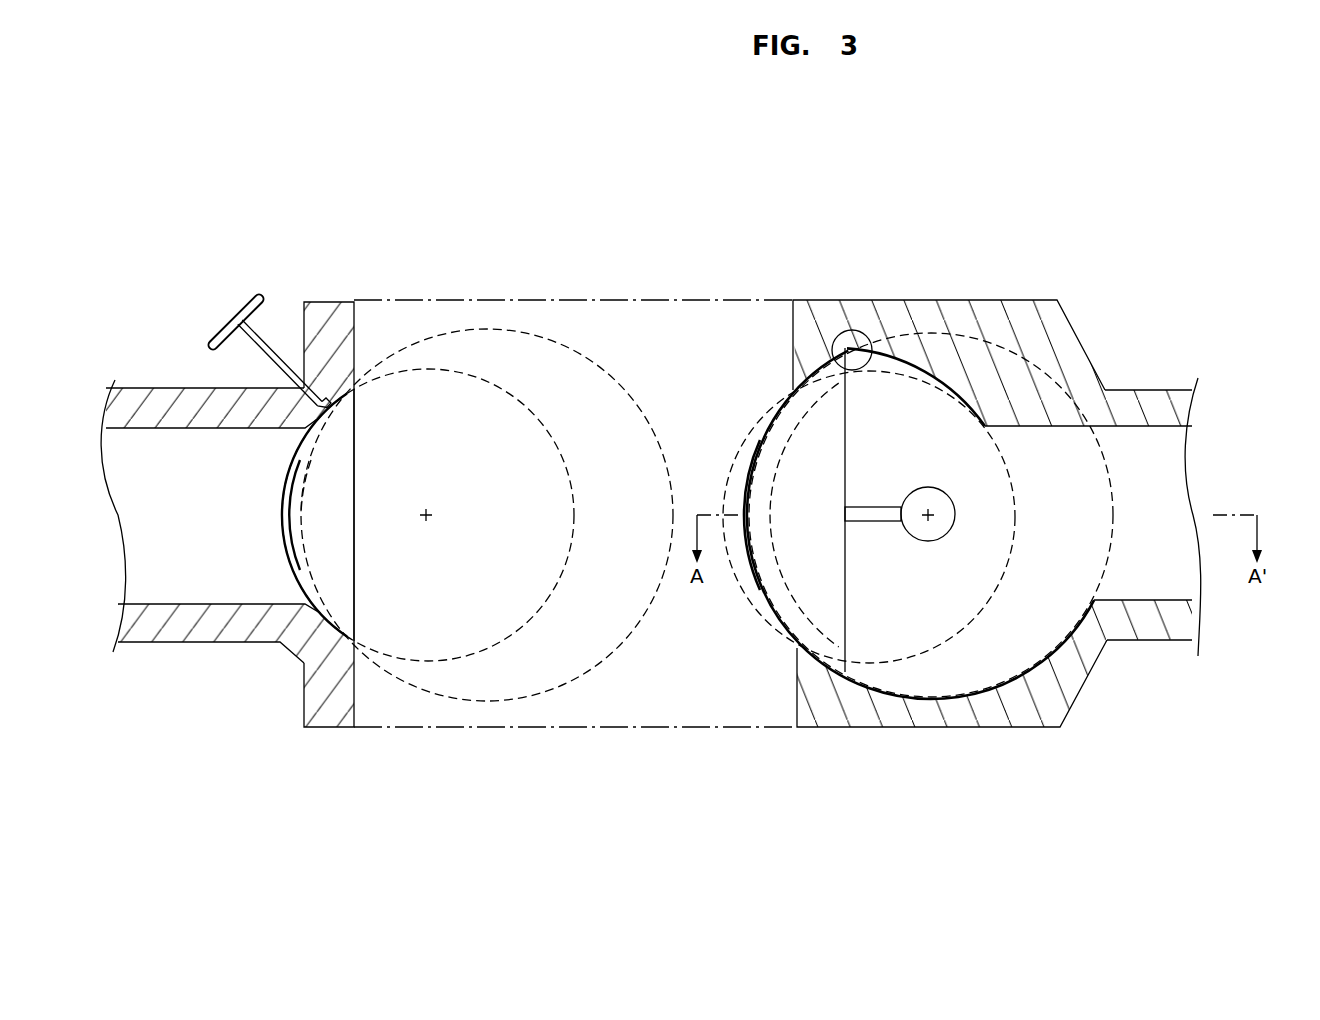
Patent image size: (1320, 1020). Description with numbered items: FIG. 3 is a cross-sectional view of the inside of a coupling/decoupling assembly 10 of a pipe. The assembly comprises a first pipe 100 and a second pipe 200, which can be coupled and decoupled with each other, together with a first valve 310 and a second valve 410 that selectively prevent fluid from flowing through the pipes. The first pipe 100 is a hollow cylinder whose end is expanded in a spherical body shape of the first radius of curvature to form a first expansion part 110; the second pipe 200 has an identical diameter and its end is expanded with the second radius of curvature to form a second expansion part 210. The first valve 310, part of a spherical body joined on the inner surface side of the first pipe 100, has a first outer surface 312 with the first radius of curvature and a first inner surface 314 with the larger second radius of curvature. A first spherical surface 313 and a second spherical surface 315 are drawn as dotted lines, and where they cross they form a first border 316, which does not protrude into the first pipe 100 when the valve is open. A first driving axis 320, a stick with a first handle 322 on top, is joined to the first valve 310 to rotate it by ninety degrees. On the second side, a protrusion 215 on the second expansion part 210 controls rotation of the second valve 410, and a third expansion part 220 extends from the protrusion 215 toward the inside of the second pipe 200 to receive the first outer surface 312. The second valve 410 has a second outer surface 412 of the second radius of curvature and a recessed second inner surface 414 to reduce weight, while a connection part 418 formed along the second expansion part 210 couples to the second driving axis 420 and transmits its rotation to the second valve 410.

The coupling/decoupling assembly 10 is at (94, 123).
The first pipe 100 is at (156, 372).
The first expansion part 110 is at (348, 392).
The second pipe 200 is at (1138, 655).
The second expansion part 210 is at (816, 358).
The protrusion 215 is at (852, 330).
The third expansion part 220 is at (933, 378).
The first valve 310 is at (262, 507).
The first outer surface 312 is at (291, 560).
The first spherical surface 313 is at (440, 369).
The first inner surface 314 is at (302, 456).
The second spherical surface 315 is at (551, 329).
The first border 316 is at (356, 572).
The first driving axis 320 is at (276, 278).
The first handle 322 is at (238, 330).
The second valve 410 is at (760, 630).
The second outer surface 412 is at (762, 612).
The second inner surface 414 is at (792, 600).
The connection part 418 is at (870, 505).
The second driving axis 420 is at (955, 513).